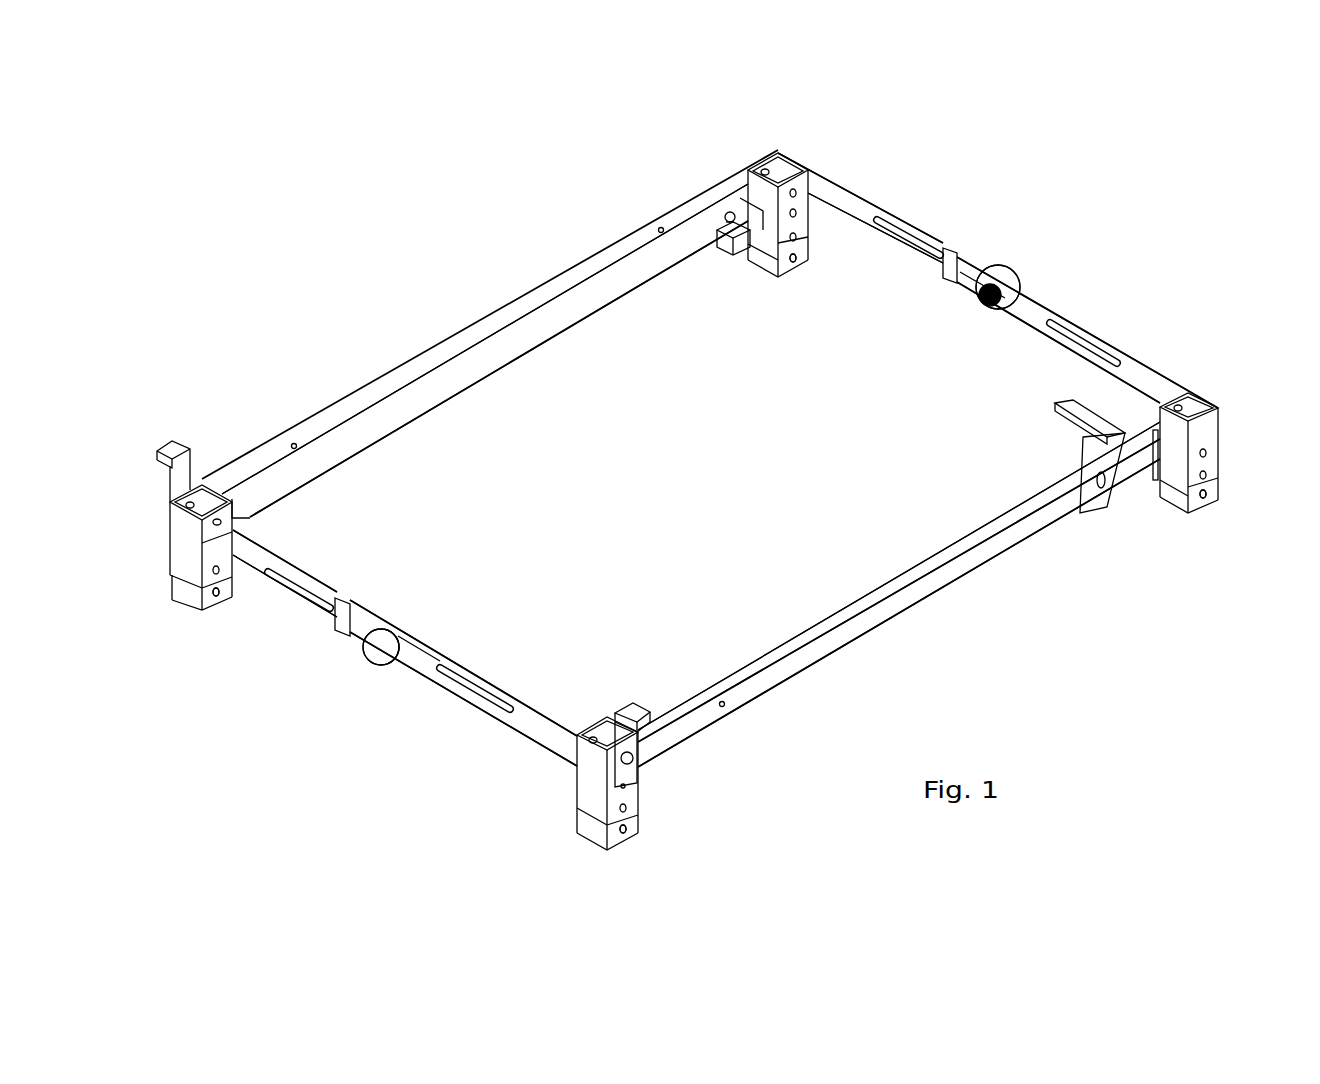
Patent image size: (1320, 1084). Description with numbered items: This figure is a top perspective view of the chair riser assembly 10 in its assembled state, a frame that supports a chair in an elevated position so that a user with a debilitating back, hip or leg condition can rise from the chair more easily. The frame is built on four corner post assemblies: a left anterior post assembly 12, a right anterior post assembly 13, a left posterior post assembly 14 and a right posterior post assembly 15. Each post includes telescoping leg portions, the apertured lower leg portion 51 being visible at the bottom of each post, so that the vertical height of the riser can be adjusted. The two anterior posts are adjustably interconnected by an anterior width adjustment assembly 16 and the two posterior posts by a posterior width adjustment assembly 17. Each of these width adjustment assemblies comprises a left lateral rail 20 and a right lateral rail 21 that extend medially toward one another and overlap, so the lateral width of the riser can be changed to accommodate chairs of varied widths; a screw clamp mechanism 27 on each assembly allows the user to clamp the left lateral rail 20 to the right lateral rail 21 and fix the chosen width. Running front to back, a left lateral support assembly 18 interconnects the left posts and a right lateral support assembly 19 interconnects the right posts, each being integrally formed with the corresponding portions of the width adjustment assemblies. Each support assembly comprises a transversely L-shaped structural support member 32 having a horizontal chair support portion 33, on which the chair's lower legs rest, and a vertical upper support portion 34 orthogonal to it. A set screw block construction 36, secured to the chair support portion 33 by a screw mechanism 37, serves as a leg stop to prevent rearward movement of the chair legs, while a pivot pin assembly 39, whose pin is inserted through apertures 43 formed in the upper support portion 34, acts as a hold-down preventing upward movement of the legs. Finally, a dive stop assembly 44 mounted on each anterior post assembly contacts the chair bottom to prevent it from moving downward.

The chair riser assembly 10 is at (1082, 148).
The left anterior post assembly 12 is at (598, 872).
The right anterior post assembly 13 is at (201, 630).
The left posterior post assembly 14 is at (1180, 524).
The right posterior post assembly 15 is at (773, 286).
The anterior width adjustment assembly 16 is at (421, 618).
The posterior width adjustment assembly 17 is at (1110, 322).
The left lateral support assembly 18 is at (977, 633).
The right lateral support assembly 19 is at (462, 291).
The left lateral rail 20 is at (1146, 373).
The right lateral rail 21 is at (846, 203).
The screw clamp mechanism 27 is at (1020, 262).
The L-shaped structural support member 32 is at (449, 376).
The chair support portion 33 is at (536, 342).
The upper support portion 34 is at (1003, 548).
The set screw block construction 36 is at (728, 242).
The screw mechanism 37 is at (727, 212).
The pivot pin assembly 39 is at (1103, 519).
The apertures 43 is at (659, 227).
The dive stop assembly 44 is at (168, 446).
The apertured lower leg portion 51 is at (800, 262).